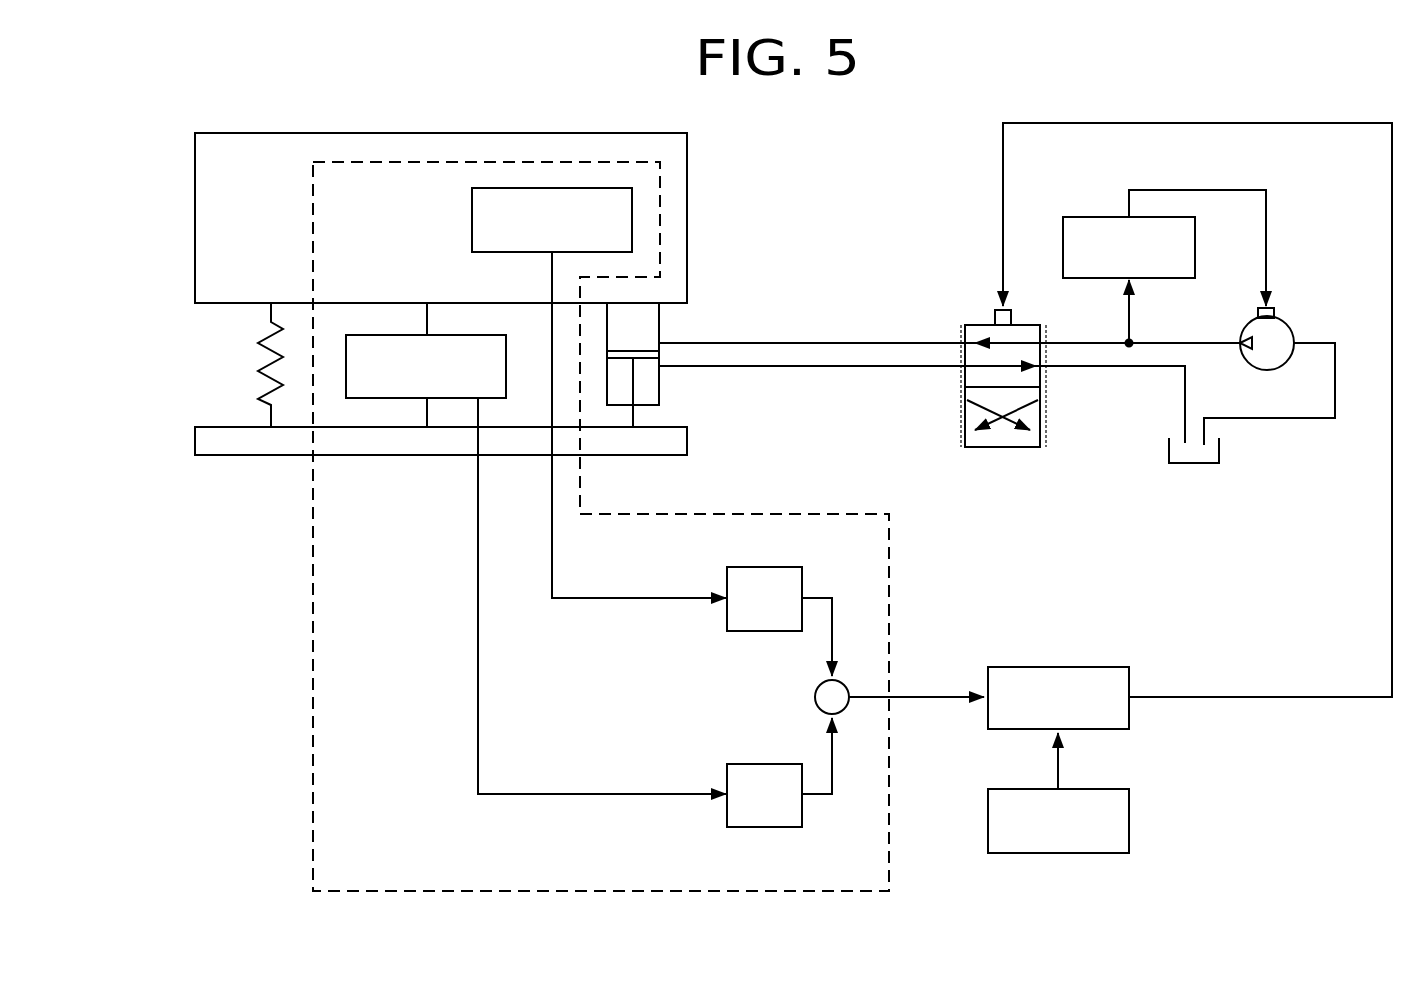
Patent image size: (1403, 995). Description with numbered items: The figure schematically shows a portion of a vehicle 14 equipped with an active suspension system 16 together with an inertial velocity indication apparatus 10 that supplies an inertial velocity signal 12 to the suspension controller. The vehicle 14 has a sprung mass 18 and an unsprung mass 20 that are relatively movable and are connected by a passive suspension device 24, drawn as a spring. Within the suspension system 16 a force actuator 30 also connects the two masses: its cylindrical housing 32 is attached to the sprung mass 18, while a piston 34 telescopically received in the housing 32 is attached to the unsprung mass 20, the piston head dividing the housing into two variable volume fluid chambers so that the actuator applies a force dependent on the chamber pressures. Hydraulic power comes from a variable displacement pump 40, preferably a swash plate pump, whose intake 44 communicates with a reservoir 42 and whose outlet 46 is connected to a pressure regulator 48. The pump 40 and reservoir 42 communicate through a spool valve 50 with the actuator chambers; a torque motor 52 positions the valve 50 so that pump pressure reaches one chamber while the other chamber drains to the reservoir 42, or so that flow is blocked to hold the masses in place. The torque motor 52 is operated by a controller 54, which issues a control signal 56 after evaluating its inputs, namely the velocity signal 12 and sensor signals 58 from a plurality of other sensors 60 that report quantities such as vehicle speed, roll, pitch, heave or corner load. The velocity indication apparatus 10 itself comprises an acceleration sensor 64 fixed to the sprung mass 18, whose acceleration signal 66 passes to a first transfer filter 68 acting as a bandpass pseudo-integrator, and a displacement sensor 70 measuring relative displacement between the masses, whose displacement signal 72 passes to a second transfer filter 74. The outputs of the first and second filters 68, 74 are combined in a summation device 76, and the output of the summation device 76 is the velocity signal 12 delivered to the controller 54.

The inertial velocity indication apparatus 10 is at (300, 601).
The inertial velocity signal 12 is at (928, 695).
The vehicle 14 is at (177, 86).
The active suspension system 16 is at (853, 266).
The sprung mass 18 is at (270, 142).
The unsprung mass 20 is at (230, 450).
The passive suspension device 24 is at (258, 342).
The force actuator 30 is at (730, 315).
The cylindrical housing 32 is at (660, 322).
The piston 34 is at (633, 382).
The variable displacement pump 40 is at (1278, 333).
The reservoir 42 is at (1170, 453).
The intake 44 is at (1310, 343).
The outlet 46 is at (1240, 342).
The pressure regulator 48 is at (1088, 220).
The spool valve 50 is at (1000, 440).
The torque motor 52 is at (995, 318).
The controller 54 is at (1100, 667).
The control signal 56 is at (1222, 693).
The sensor signals 58 is at (1058, 770).
The other sensors 60 is at (1128, 818).
The acceleration sensor 64 is at (472, 232).
The acceleration signal 66 is at (551, 490).
The first transfer filter 68 is at (727, 576).
The displacement sensor 70 is at (466, 340).
The displacement signal 72 is at (477, 503).
The second transfer filter 74 is at (727, 770).
The summation device 76 is at (816, 691).